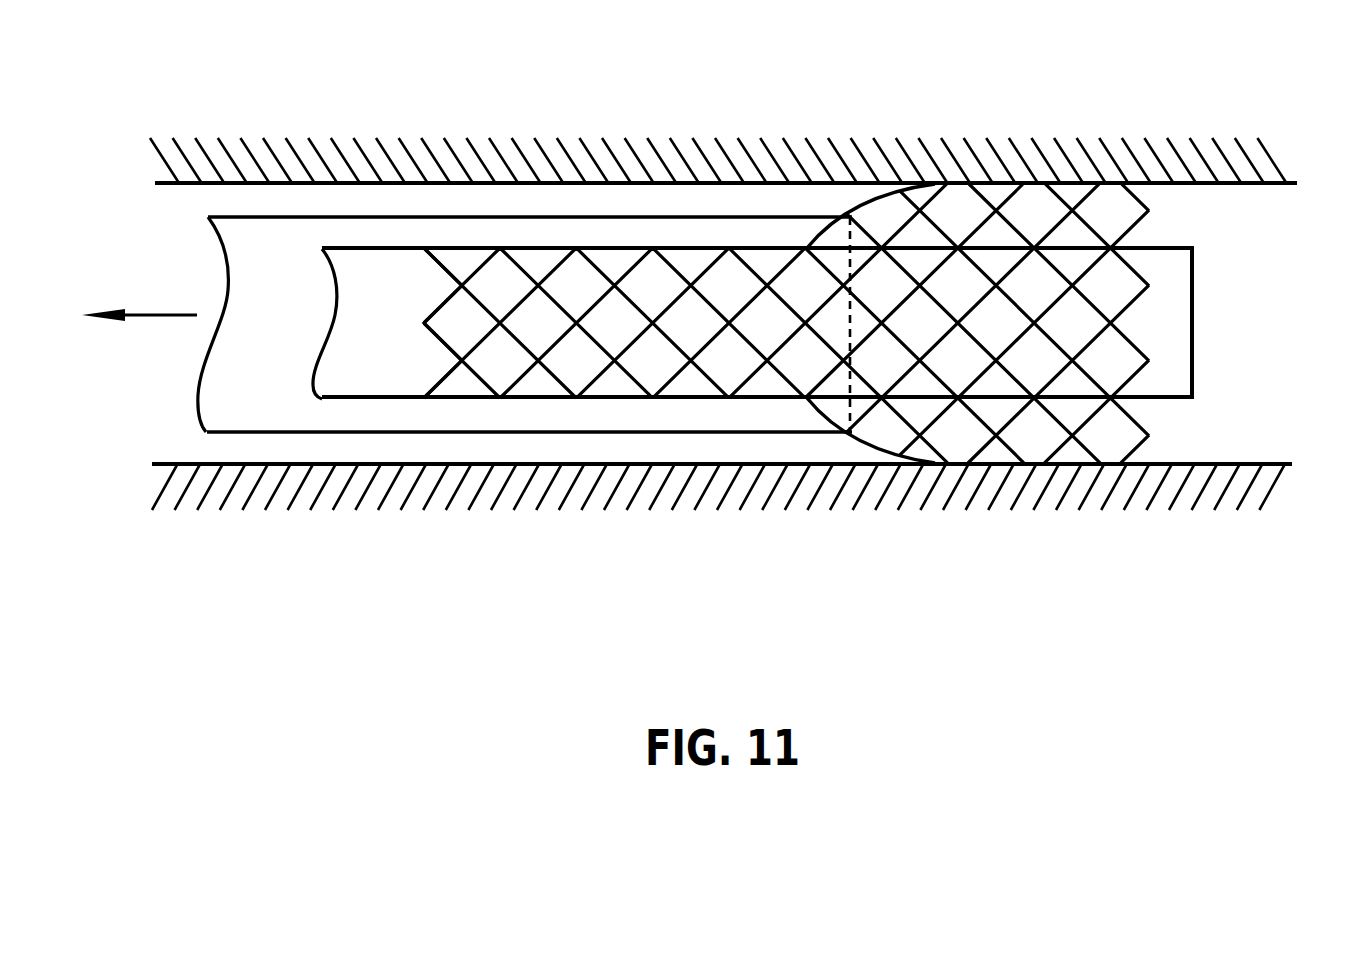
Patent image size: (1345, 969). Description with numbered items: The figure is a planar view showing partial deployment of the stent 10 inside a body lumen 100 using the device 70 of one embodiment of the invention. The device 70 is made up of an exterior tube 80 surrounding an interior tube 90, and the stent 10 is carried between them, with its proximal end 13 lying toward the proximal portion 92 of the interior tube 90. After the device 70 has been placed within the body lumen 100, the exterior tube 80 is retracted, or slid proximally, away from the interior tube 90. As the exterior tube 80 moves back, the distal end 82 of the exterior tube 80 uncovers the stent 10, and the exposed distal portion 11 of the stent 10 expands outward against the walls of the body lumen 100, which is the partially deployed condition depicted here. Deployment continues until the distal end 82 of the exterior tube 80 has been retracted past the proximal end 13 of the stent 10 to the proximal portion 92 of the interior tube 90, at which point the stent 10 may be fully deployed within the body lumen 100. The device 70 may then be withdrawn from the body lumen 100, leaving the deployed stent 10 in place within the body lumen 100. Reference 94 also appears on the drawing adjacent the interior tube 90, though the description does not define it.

The stent 10 is at (1143, 430).
The exposed distal portion 11 is at (1143, 365).
The proximal end 13 is at (433, 322).
The device 70 is at (840, 192).
The exterior tube 80 is at (250, 434).
The distal end 82 is at (793, 433).
The interior tube 90 is at (1192, 262).
The proximal portion 92 is at (363, 378).
The distal end of inner tube 94 is at (1192, 325).
The body lumen 100 is at (1242, 180).